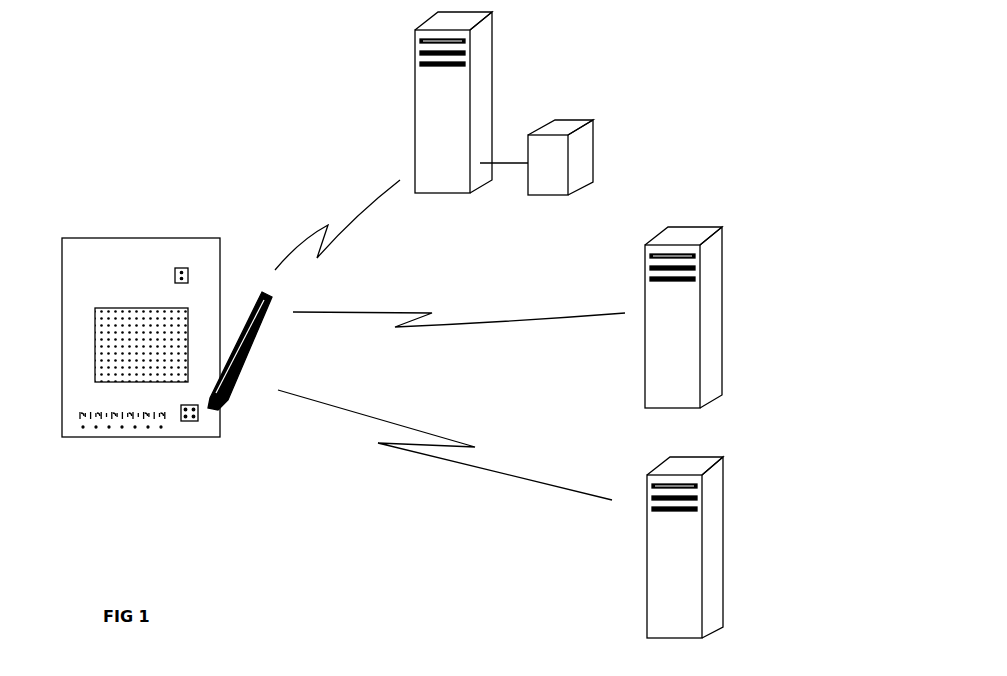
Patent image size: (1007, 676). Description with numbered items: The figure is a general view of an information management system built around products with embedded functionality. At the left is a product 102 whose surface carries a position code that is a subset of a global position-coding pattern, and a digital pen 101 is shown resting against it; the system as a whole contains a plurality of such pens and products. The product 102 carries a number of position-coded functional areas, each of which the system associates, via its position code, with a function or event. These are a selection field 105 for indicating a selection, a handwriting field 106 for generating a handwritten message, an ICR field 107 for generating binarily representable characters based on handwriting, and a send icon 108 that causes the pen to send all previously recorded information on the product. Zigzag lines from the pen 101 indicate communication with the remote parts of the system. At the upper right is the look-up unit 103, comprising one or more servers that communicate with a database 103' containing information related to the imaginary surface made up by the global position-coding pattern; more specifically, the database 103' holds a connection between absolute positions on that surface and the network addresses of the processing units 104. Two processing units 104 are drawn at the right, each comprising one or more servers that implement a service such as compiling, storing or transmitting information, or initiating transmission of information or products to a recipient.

The digital pen 101 is at (246, 365).
The product with position-coded surface 102 is at (108, 238).
The look-up unit 103 is at (488, 102).
The database 103' is at (574, 157).
The processing unit 104 is at (707, 313).
The selection field 105 is at (186, 268).
The handwriting field 106 is at (95, 373).
The ICR field 107 is at (128, 424).
The send icon 108 is at (188, 421).